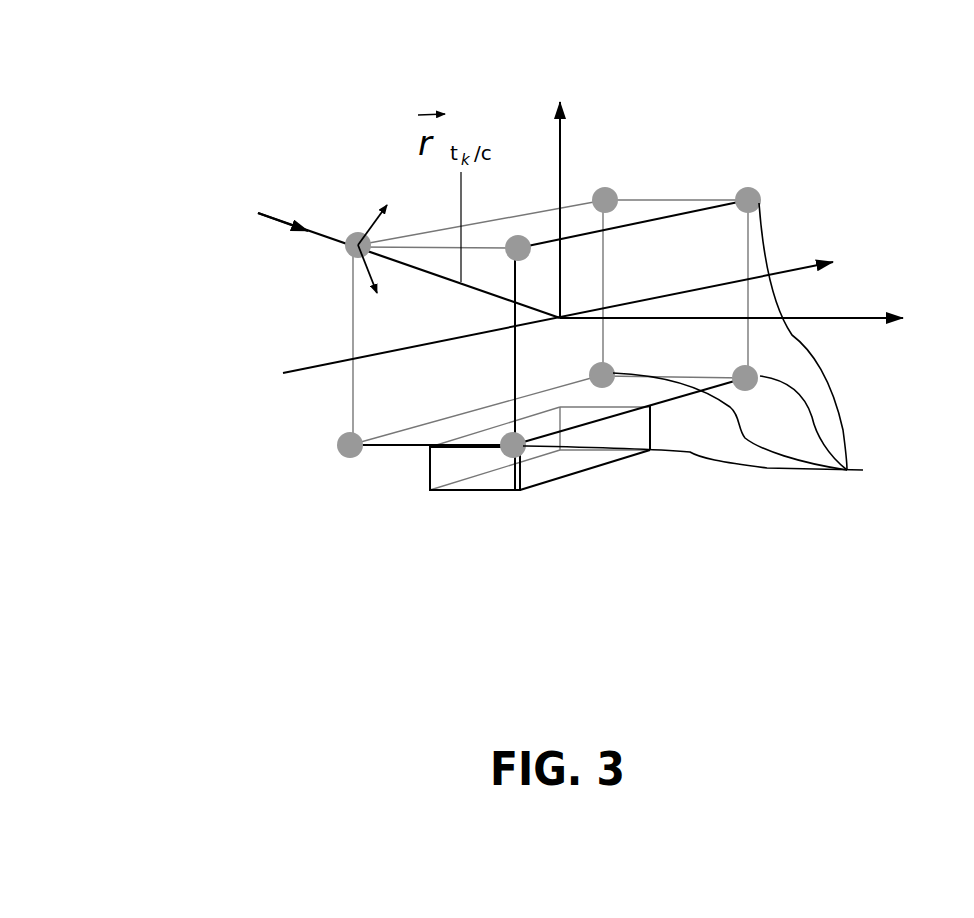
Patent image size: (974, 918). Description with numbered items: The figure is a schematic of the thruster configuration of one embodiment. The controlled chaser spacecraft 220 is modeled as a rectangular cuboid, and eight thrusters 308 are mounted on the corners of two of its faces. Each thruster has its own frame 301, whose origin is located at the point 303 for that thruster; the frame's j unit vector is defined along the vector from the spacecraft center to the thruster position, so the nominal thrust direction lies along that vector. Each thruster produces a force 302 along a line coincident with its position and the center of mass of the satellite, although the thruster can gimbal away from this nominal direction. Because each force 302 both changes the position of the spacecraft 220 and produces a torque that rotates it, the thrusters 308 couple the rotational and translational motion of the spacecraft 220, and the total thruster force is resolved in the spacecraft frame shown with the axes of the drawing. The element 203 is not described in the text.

The camera reference frame F_c 203 is at (636, 72).
The controlled chaser spacecraft 220 is at (678, 195).
The thruster frame 301 is at (340, 173).
The force 302 is at (258, 200).
The origin point 303 is at (342, 278).
The thrusters 308 is at (725, 346).